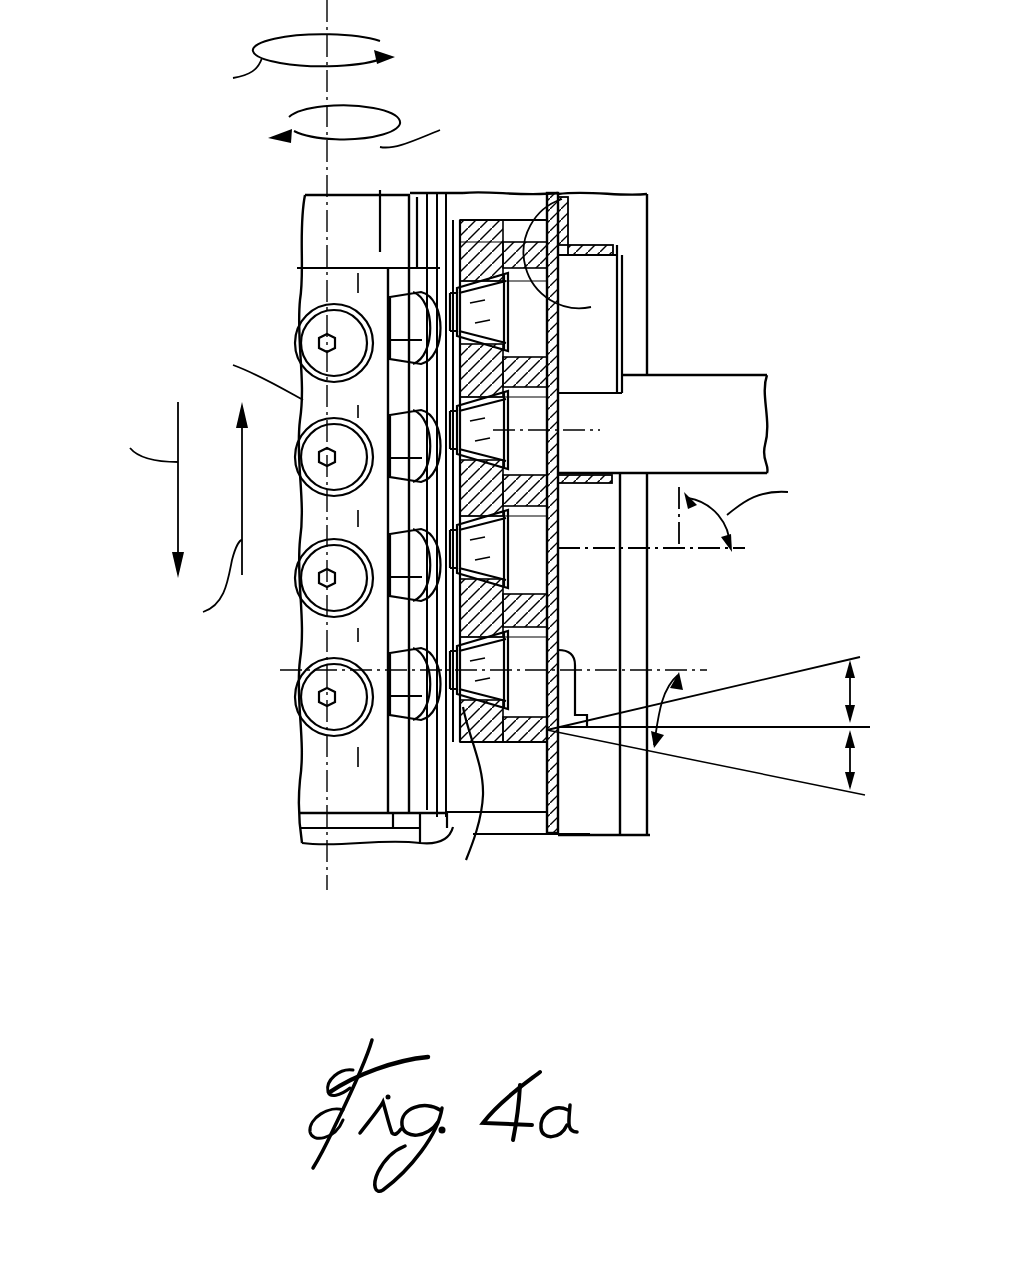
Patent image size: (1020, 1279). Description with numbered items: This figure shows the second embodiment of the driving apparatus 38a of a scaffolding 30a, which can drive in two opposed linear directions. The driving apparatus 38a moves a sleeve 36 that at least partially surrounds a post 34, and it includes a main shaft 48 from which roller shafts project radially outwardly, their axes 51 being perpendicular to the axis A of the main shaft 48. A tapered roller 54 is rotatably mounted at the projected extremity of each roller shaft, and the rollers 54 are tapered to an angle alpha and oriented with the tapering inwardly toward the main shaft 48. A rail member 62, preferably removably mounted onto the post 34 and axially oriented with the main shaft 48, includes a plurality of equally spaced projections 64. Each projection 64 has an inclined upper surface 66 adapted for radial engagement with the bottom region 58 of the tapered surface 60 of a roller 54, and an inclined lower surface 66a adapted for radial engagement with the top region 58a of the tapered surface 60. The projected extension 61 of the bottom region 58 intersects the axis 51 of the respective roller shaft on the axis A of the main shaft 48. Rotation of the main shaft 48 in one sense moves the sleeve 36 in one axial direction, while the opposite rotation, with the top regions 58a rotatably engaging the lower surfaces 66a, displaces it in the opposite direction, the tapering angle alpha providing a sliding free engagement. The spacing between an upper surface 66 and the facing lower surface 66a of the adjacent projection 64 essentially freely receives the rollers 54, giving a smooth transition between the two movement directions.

The scaffolding 30a is at (527, 140).
The post 34 is at (562, 790).
The sleeve 36 is at (347, 837).
The driving apparatus 38a is at (343, 290).
The main shaft 48 is at (340, 785).
The axis of the roller shaft 51 is at (672, 672).
The roller 54 is at (300, 703).
The bottom region 58 is at (487, 630).
The top region 58a is at (545, 610).
The tapered surface 60 is at (493, 432).
The projected extension 61 is at (698, 762).
The rail member 62 is at (543, 265).
The projection 64 is at (511, 810).
The upper surface 66 is at (545, 195).
The lower surface 66a is at (591, 307).